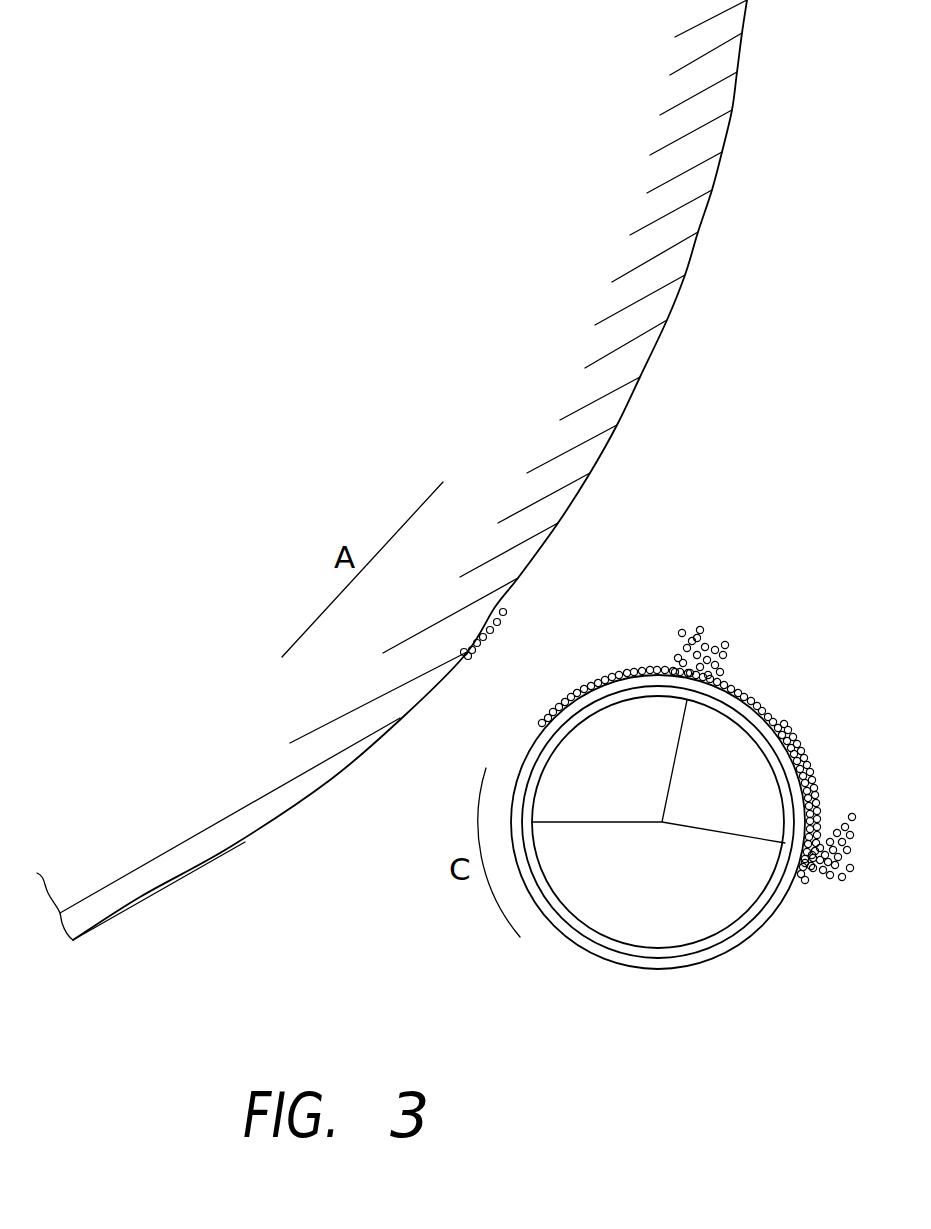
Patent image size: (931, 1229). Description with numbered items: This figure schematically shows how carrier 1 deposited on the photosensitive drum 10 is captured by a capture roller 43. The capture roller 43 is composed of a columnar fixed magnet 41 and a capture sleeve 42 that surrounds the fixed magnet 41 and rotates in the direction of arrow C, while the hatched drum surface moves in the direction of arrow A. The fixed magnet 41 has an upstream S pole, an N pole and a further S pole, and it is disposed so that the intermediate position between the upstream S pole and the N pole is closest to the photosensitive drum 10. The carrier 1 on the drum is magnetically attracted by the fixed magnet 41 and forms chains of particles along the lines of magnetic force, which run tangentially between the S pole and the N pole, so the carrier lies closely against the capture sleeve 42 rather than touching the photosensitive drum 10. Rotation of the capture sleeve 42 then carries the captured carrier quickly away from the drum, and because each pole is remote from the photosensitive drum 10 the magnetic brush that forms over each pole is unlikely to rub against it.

The carrier 1 is at (496, 622).
The photosensitive drum 10 is at (700, 177).
The fixed magnet 41 is at (652, 915).
The capture sleeve 42 is at (563, 934).
The capture roller 43 is at (740, 962).